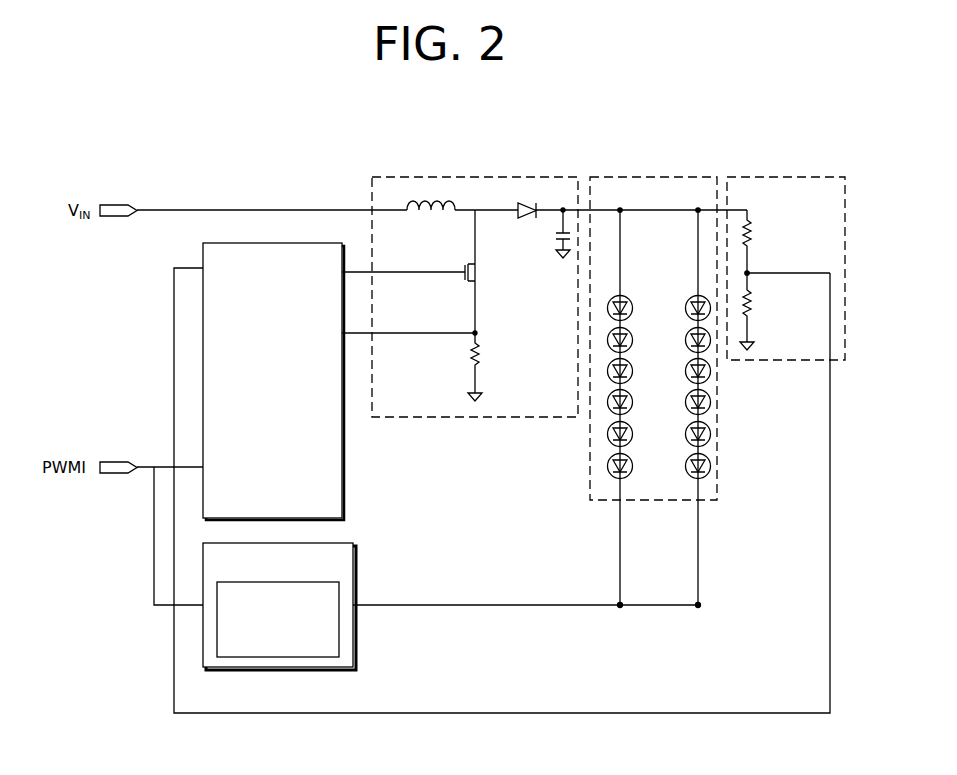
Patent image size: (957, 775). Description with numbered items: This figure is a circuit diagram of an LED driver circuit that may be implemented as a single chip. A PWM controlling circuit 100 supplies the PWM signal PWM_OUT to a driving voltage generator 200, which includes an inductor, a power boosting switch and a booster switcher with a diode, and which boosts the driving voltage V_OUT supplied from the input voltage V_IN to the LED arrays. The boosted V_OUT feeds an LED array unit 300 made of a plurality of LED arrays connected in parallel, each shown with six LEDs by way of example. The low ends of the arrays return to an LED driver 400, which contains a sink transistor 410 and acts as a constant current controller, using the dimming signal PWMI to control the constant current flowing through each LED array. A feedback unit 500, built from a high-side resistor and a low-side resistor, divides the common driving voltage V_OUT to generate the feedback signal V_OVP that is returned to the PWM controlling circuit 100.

The PWM controlling circuit 100 is at (203, 243).
The driving voltage generator 200 is at (500, 177).
The LED array unit 300 is at (611, 177).
The LED driver 400 is at (356, 577).
The sink transistor 410 is at (278, 657).
The feedback unit 500 is at (740, 177).